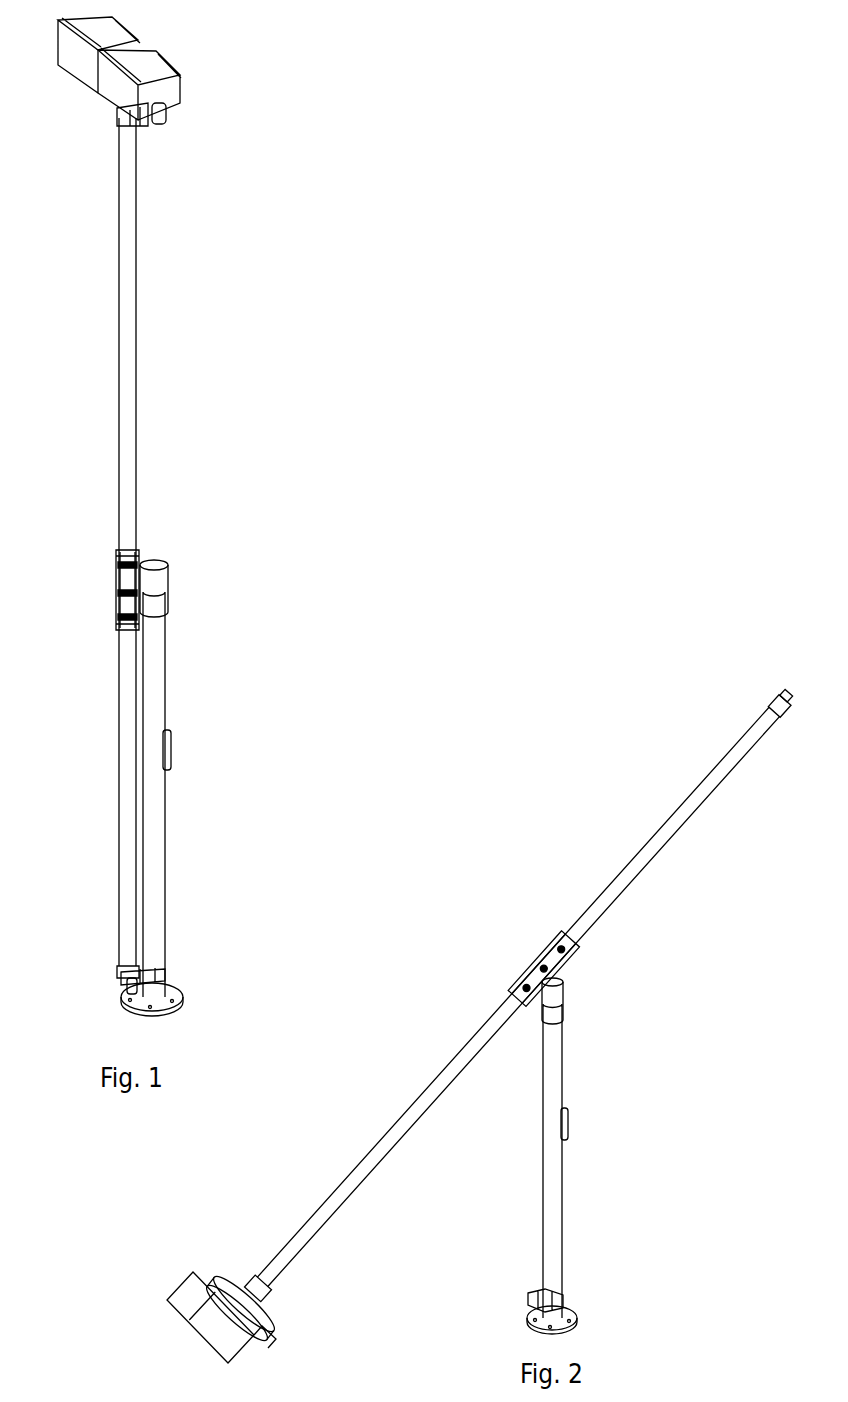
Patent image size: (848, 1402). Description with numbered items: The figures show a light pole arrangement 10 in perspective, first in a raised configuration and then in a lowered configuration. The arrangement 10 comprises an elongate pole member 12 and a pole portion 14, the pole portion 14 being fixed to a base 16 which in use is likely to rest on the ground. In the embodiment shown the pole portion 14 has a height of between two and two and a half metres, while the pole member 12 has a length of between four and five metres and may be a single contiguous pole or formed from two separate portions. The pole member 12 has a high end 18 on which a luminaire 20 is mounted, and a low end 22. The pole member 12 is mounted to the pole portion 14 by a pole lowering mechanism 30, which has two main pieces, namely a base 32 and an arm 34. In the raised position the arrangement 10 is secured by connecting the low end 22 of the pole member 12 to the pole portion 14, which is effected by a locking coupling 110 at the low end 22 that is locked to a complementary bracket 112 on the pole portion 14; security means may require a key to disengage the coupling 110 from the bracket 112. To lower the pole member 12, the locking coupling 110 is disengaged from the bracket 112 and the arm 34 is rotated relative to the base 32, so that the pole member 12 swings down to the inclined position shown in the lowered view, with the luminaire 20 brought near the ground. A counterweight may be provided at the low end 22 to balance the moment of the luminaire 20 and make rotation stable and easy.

In FIG. 1, the pole arrangement 10 is at (133, 297).
In FIG. 2, the pole arrangement 10 is at (628, 867).
In FIG. 1, the pole member 12 is at (119, 368).
In FIG. 2, the pole member 12 is at (663, 832).
In FIG. 1, the pole portion 14 is at (157, 857).
In FIG. 2, the pole portion 14 is at (557, 1235).
In FIG. 1, the base 16 is at (183, 995).
In FIG. 2, the base 16 is at (575, 1313).
In FIG. 1, the high end 18 is at (120, 128).
In FIG. 2, the high end 18 is at (267, 1277).
In FIG. 1, the luminaire 20 is at (150, 58).
In FIG. 2, the luminaire 20 is at (258, 1345).
In FIG. 1, the low end 22 is at (122, 965).
In FIG. 2, the low end 22 is at (768, 713).
In FIG. 1, the pole lowering mechanism 30 is at (157, 575).
In FIG. 2, the pole lowering mechanism 30 is at (562, 983).
In FIG. 1, the base 32 is at (160, 603).
In FIG. 2, the base 32 is at (563, 1015).
In FIG. 1, the arm 34 is at (118, 585).
In FIG. 2, the arm 34 is at (524, 960).
In FIG. 1, the locking coupling 110 is at (128, 982).
In FIG. 2, the locking coupling 110 is at (780, 698).
In FIG. 1, the bracket 112 is at (163, 978).
In FIG. 2, the bracket 112 is at (533, 1305).